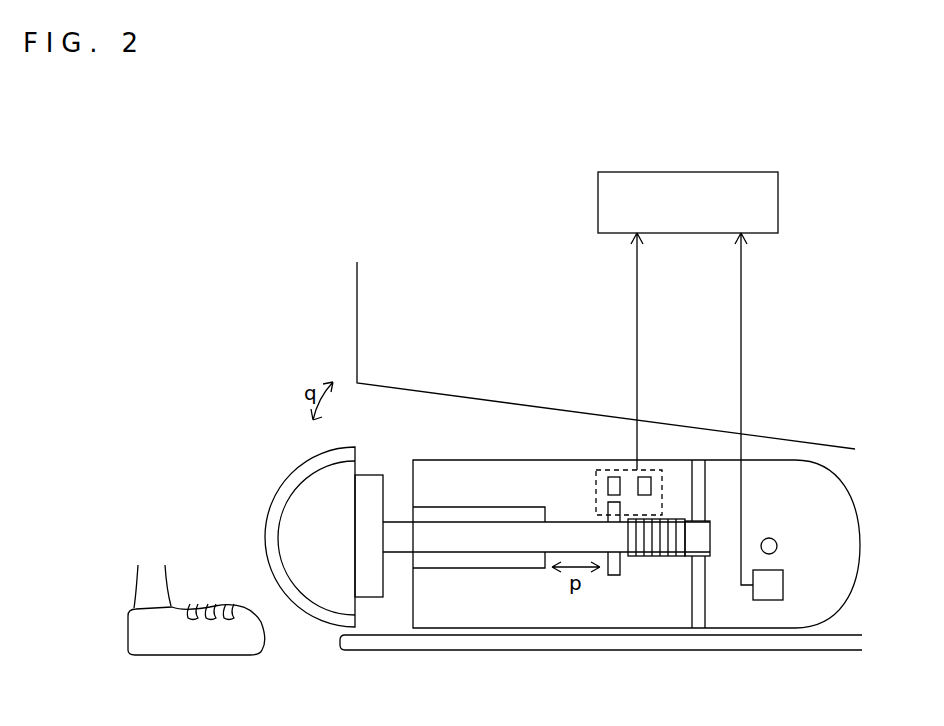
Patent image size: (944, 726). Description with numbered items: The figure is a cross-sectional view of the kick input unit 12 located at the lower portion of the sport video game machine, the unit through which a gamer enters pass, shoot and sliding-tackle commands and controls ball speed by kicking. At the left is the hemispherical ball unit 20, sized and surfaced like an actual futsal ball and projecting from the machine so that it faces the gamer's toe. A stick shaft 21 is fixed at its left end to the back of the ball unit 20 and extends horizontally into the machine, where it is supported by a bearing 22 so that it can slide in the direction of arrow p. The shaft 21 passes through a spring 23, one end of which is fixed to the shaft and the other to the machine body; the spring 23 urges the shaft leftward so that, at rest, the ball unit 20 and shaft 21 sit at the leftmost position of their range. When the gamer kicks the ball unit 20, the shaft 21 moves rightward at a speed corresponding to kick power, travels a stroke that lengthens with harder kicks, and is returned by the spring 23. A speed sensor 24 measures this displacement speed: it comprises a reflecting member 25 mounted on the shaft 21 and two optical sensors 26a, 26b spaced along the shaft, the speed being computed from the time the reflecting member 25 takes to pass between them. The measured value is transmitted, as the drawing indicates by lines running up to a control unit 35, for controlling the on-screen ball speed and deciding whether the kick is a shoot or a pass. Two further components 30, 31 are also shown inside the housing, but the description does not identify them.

The kick input unit 12 is at (503, 433).
The ball unit 20 is at (277, 490).
The stick shaft 21 is at (436, 537).
The bearing 22 is at (503, 507).
The spring 23 is at (648, 557).
The speed sensor 24 is at (628, 470).
The reflecting member 25 is at (615, 577).
The optical sensor 26a is at (612, 477).
The optical sensor 26b is at (644, 477).
The lamp 30 is at (767, 539).
The switch 31 is at (783, 577).
The control unit 35 is at (727, 172).